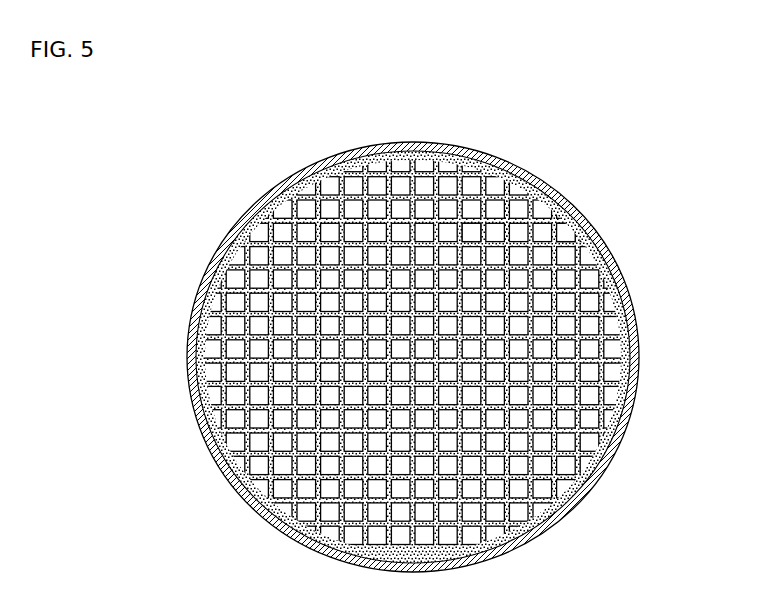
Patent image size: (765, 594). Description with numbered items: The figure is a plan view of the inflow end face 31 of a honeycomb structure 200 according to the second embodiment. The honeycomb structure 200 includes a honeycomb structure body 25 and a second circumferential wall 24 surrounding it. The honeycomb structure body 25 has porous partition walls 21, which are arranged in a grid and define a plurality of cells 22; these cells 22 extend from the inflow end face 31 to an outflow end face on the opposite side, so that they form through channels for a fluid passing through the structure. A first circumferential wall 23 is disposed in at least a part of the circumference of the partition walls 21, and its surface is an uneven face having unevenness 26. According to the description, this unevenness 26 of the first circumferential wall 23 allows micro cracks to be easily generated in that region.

The honeycomb structure 200 is at (458, 324).
The partition walls 21 is at (512, 237).
The cells 22 is at (473, 232).
The first circumferential wall 23 is at (603, 242).
The second circumferential wall 24 is at (626, 289).
The honeycomb structure body 25 is at (561, 238).
The unevenness 26 is at (638, 356).
The inflow end face 31 is at (243, 213).